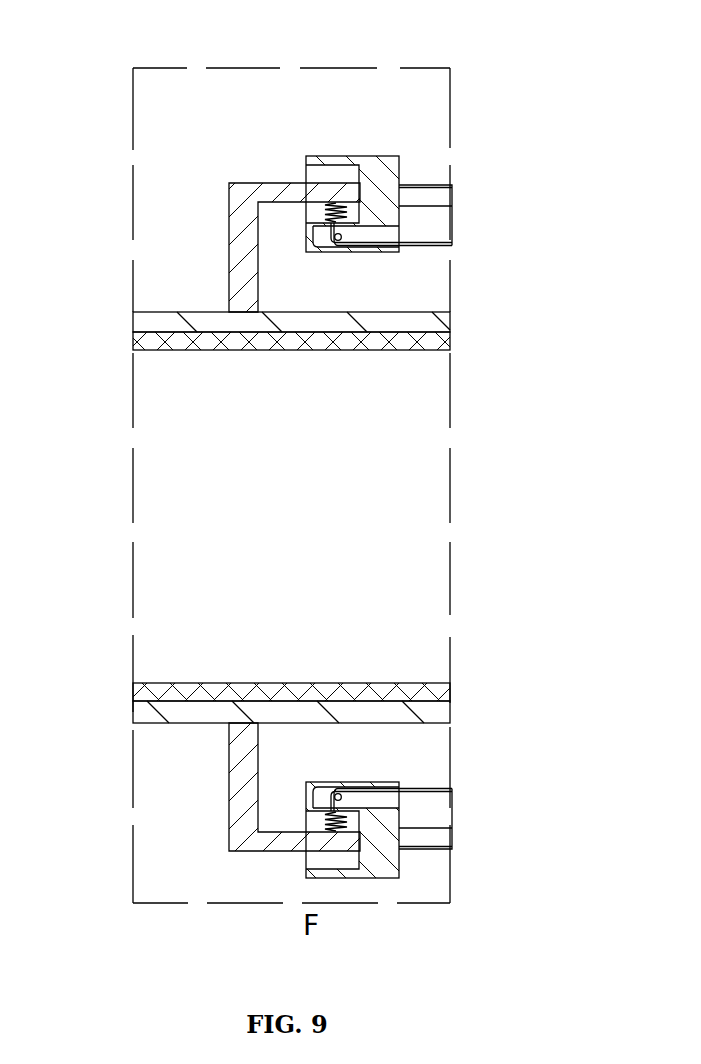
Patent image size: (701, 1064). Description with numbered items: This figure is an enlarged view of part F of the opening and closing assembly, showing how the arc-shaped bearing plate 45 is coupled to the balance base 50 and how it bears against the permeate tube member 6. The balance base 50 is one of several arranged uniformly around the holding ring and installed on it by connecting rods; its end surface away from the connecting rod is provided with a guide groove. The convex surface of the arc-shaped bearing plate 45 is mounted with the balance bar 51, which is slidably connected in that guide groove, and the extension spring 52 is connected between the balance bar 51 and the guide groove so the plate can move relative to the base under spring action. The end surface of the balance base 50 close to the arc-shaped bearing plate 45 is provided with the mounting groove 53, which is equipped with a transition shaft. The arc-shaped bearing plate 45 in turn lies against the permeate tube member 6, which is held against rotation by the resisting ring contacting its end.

The permeate tube member 6 is at (365, 683).
The arc-shaped bearing plate 45 is at (163, 310).
The balance base 50 is at (378, 168).
The balance bar 51 is at (273, 192).
The extension spring 52 is at (340, 222).
The mounting groove 53 is at (388, 786).